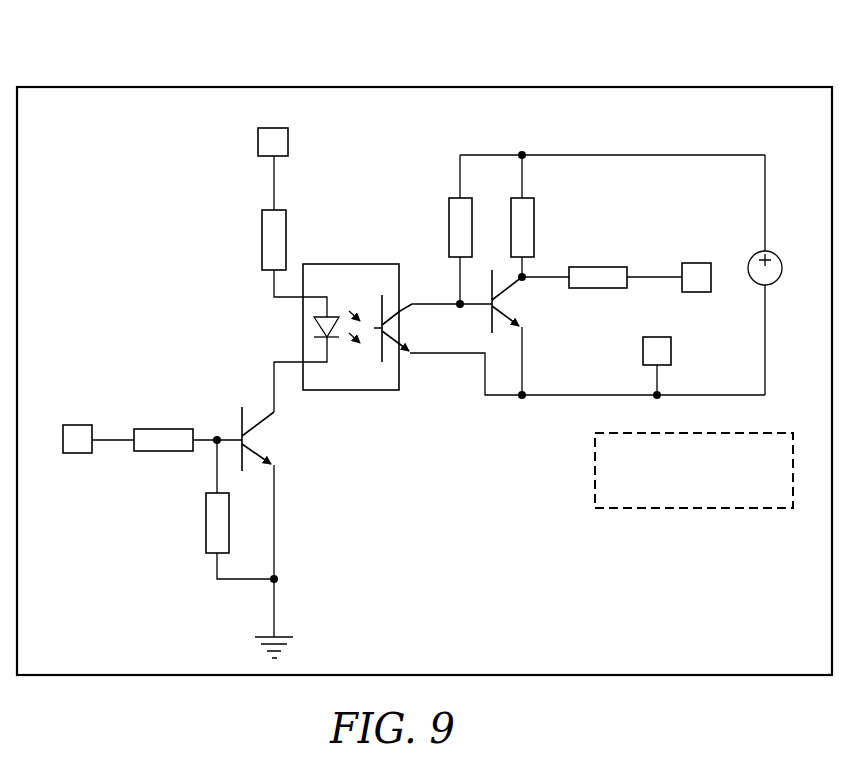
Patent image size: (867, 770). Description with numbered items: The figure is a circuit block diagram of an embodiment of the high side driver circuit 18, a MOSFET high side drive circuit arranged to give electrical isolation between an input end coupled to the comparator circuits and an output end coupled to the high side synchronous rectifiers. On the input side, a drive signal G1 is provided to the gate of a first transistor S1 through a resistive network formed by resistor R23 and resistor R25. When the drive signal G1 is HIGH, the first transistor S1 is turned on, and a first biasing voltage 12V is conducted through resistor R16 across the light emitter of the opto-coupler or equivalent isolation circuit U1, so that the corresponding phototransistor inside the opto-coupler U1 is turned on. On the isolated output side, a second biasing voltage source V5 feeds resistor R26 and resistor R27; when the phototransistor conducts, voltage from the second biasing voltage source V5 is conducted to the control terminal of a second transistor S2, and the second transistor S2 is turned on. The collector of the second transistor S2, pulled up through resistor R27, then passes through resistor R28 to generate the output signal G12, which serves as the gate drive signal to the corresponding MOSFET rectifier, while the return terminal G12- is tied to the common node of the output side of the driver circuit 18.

The high side driver circuit 18 is at (93, 68).
The first biasing voltage 12V is at (275, 128).
The resistor R16 is at (254, 240).
The opto-coupler U1 is at (381, 327).
The resistor R26 is at (437, 227).
The resistor R27 is at (545, 227).
The resistor R28 is at (598, 293).
The output signal G12 is at (696, 264).
The output return terminal G12- is at (656, 338).
The second transistor S2 is at (520, 301).
The second biasing voltage source V5 is at (781, 268).
The drive signal G1 is at (59, 439).
The resistor R23 is at (163, 428).
The resistor R25 is at (197, 523).
The first transistor S1 is at (272, 439).